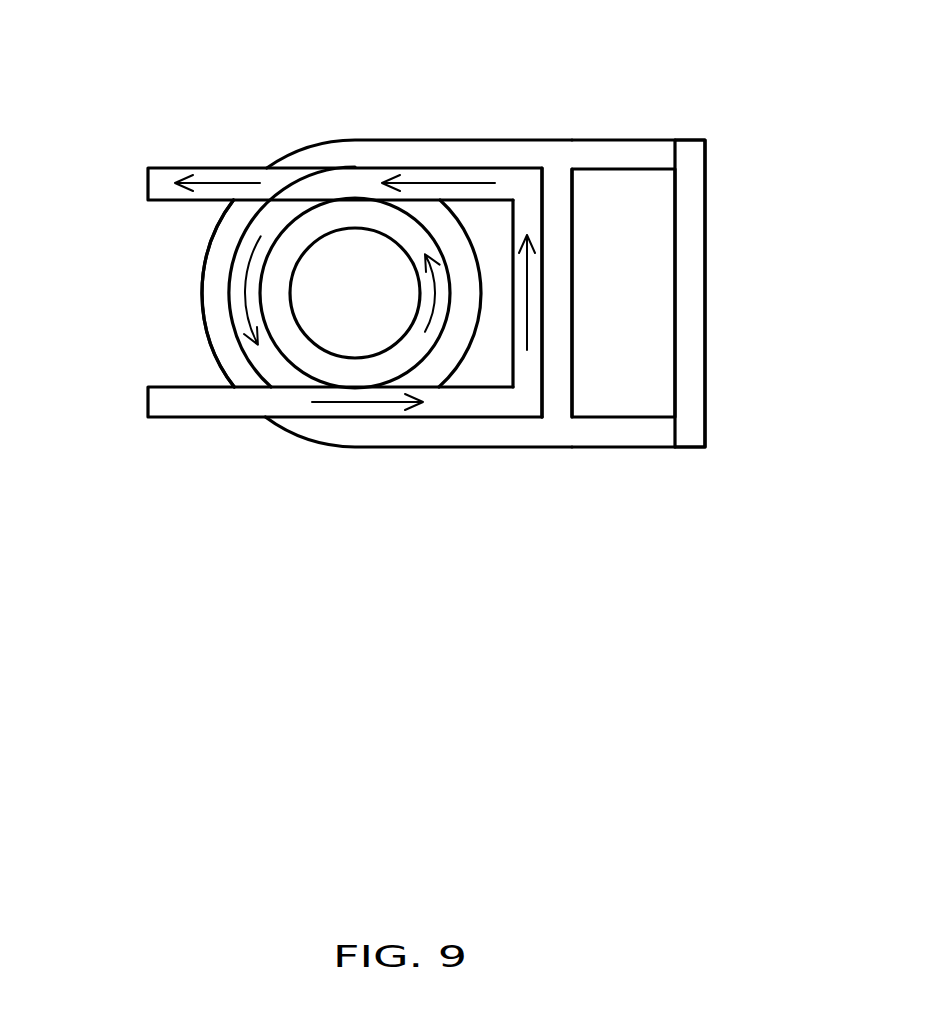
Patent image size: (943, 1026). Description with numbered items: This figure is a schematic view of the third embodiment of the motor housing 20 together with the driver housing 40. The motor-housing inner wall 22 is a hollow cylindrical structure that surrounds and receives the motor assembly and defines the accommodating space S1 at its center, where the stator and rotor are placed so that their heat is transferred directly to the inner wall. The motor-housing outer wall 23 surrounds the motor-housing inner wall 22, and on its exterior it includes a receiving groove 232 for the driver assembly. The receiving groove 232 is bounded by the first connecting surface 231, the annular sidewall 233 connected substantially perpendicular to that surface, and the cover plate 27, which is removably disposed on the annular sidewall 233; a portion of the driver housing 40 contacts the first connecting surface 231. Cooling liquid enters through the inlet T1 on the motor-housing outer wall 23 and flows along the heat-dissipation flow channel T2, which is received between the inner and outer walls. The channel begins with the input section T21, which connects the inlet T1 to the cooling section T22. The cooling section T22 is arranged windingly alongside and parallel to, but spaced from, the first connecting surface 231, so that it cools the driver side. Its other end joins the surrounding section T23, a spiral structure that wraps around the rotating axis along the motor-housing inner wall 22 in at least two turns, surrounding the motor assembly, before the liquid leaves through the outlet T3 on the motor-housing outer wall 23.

The motor housing 20 is at (123, 63).
The motor-housing inner wall 22 is at (438, 157).
The motor-housing outer wall 23 is at (350, 215).
The cover plate 27 is at (688, 259).
The driver housing 40 is at (649, 454).
The first connecting surface 231 is at (573, 218).
The receiving groove 232 is at (650, 310).
The annular sidewall 233 is at (650, 153).
The accommodating space S1 is at (375, 310).
The inlet T1 is at (148, 404).
The heat-dissipation flow channel T2 is at (188, 300).
The outlet T3 is at (148, 187).
The input section T21 is at (238, 403).
The cooling section T22 is at (527, 369).
The surrounding section T23 is at (513, 185).